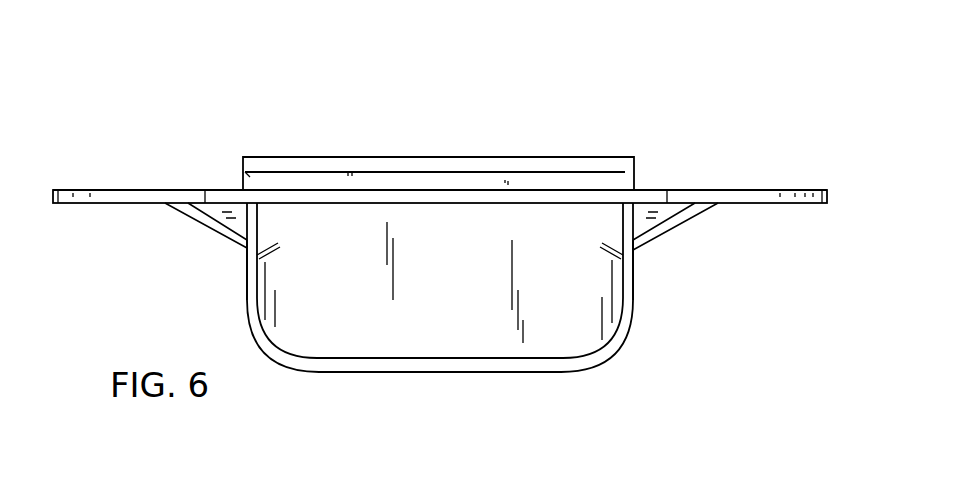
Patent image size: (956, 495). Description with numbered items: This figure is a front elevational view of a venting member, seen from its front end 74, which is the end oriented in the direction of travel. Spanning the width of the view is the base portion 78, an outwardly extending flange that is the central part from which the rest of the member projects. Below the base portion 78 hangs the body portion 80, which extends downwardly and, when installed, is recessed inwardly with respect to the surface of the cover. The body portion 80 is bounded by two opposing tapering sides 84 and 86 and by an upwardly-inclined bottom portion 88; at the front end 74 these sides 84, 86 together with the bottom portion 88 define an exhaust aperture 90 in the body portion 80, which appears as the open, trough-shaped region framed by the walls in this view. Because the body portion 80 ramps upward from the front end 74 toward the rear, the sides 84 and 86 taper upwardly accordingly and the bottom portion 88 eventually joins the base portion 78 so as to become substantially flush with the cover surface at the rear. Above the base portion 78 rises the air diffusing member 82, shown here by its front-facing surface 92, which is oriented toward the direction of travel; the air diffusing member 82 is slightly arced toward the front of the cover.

The front end 74 is at (93, 204).
The base portion 78 is at (746, 191).
The body portion 80 is at (247, 305).
The air diffusing member 82 is at (593, 156).
The tapering side 84 is at (634, 283).
The tapering side 86 is at (247, 271).
The bottom portion 88 is at (287, 228).
The exhaust aperture 90 is at (560, 336).
The front-facing surface 92 is at (343, 185).